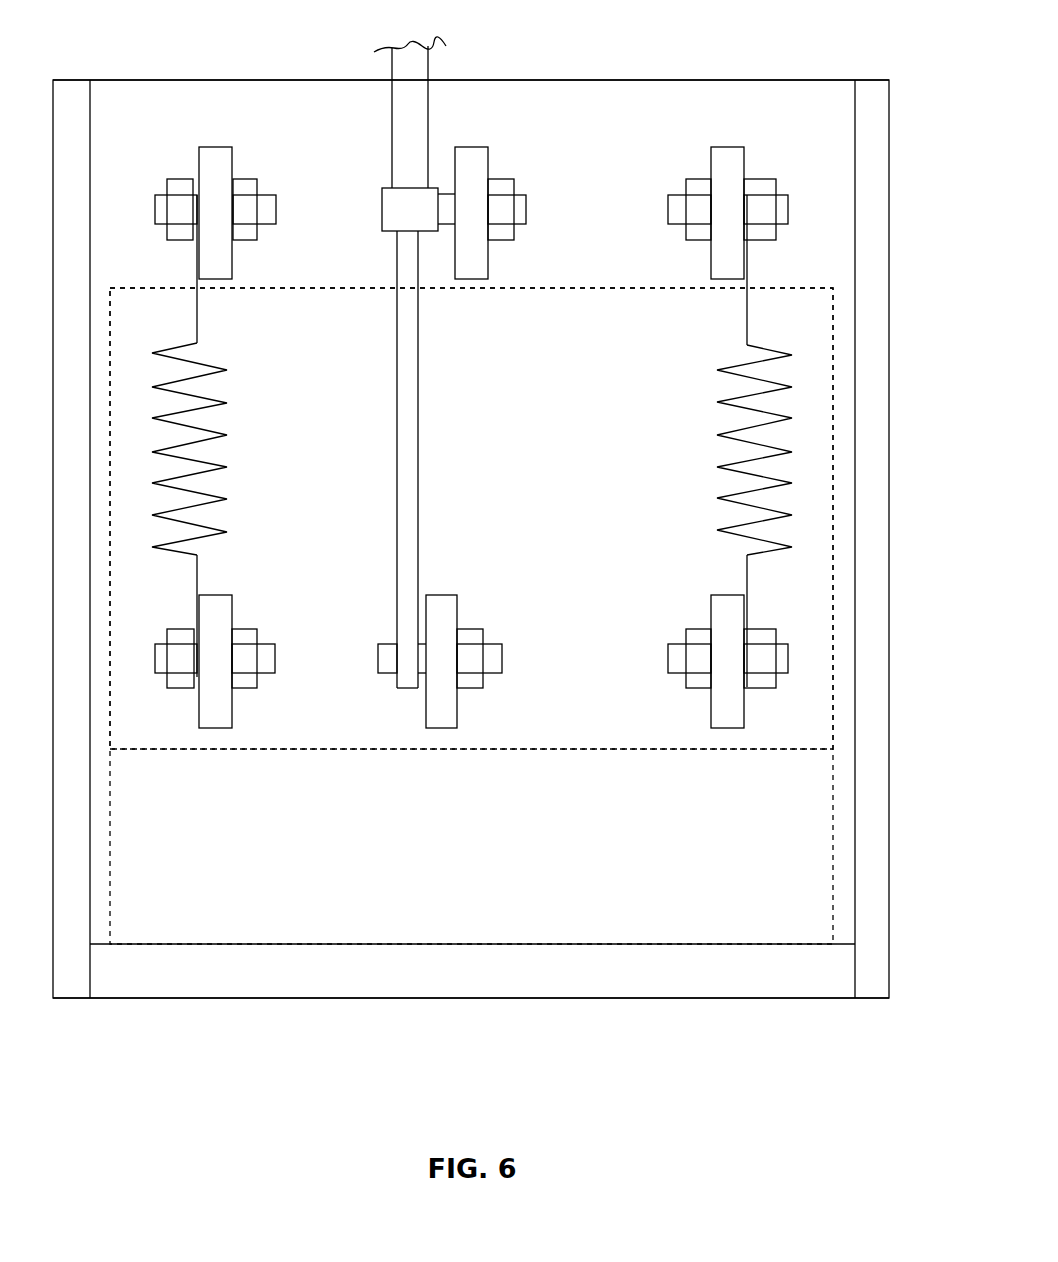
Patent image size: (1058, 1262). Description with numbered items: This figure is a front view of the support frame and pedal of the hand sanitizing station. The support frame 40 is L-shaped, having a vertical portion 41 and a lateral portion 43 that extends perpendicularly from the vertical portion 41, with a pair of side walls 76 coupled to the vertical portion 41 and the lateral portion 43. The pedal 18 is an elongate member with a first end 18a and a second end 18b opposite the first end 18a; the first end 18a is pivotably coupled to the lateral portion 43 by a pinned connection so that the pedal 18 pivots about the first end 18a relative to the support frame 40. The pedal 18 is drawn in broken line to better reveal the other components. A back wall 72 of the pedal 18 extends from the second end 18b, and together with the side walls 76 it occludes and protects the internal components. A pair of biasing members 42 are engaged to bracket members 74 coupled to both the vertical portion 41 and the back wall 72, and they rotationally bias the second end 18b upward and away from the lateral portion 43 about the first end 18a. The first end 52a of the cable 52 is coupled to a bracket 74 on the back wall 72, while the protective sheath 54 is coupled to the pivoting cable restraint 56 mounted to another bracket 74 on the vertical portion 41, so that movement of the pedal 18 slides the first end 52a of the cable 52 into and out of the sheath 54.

The support frame 40 is at (127, 79).
The vertical portion 41 is at (612, 79).
The lateral portion 43 is at (178, 998).
The side walls 76 is at (90, 132).
The pedal 18 is at (833, 805).
The first end 18a is at (430, 944).
The second end 18b is at (568, 752).
The back wall 72 is at (597, 288).
The bracket members 74 is at (210, 147).
The biasing members 42 is at (220, 432).
The cable 52 is at (418, 362).
The first end 52a is at (400, 690).
The protective sheath 54 is at (392, 135).
The pivoting cable restraint 56 is at (382, 207).